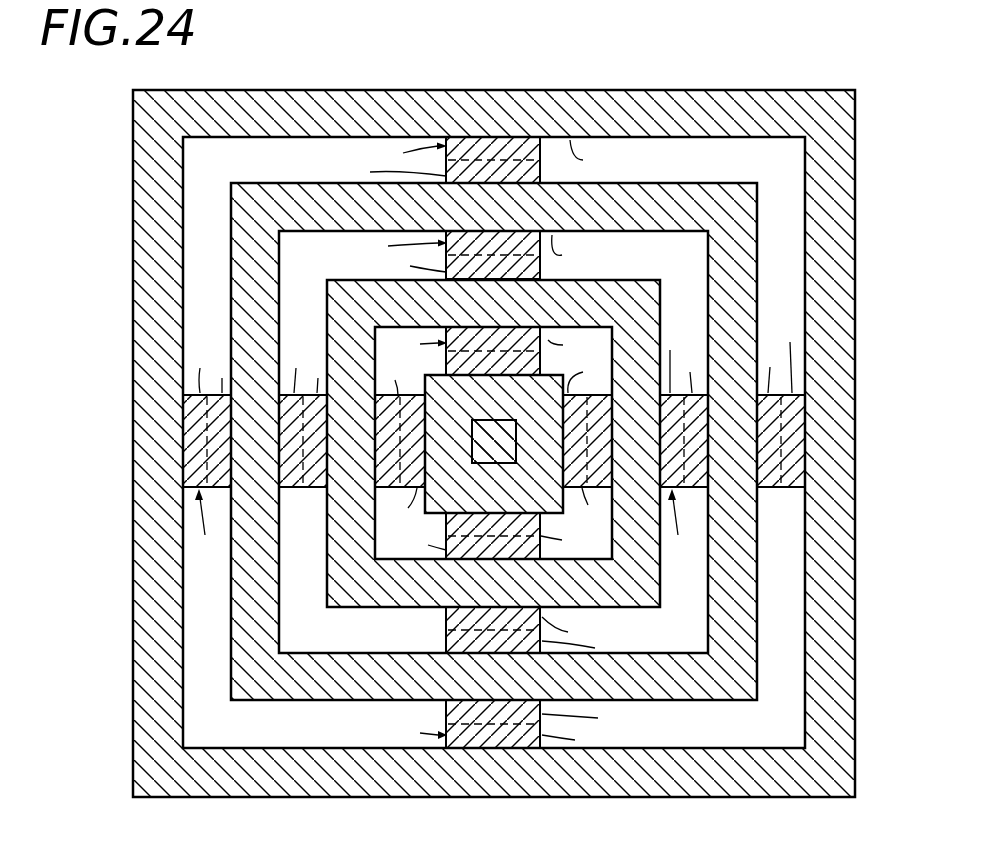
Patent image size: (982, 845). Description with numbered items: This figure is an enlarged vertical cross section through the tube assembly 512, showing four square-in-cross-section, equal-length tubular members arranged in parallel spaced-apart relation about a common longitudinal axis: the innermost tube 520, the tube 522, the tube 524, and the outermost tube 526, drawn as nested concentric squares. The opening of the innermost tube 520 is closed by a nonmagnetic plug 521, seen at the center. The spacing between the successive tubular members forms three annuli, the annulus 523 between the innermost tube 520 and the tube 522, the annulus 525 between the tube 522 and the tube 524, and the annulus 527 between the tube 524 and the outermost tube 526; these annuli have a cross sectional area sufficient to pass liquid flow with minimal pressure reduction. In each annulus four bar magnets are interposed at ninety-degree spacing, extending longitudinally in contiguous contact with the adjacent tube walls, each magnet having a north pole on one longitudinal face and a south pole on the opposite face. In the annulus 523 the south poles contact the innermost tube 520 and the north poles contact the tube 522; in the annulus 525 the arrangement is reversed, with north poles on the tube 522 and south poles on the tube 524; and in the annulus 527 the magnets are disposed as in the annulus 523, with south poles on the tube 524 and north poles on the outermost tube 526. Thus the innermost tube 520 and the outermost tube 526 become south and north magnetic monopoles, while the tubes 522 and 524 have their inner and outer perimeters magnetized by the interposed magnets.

The tube assembly 512 is at (494, 70).
The innermost tube 520 is at (512, 411).
The nonmagnetic plug 521 is at (483, 446).
The tube 522 is at (598, 292).
The annulus 523 is at (394, 556).
The tube 524 is at (252, 244).
The annulus 525 is at (318, 633).
The outermost tube 526 is at (150, 166).
The annulus 527 is at (205, 291).